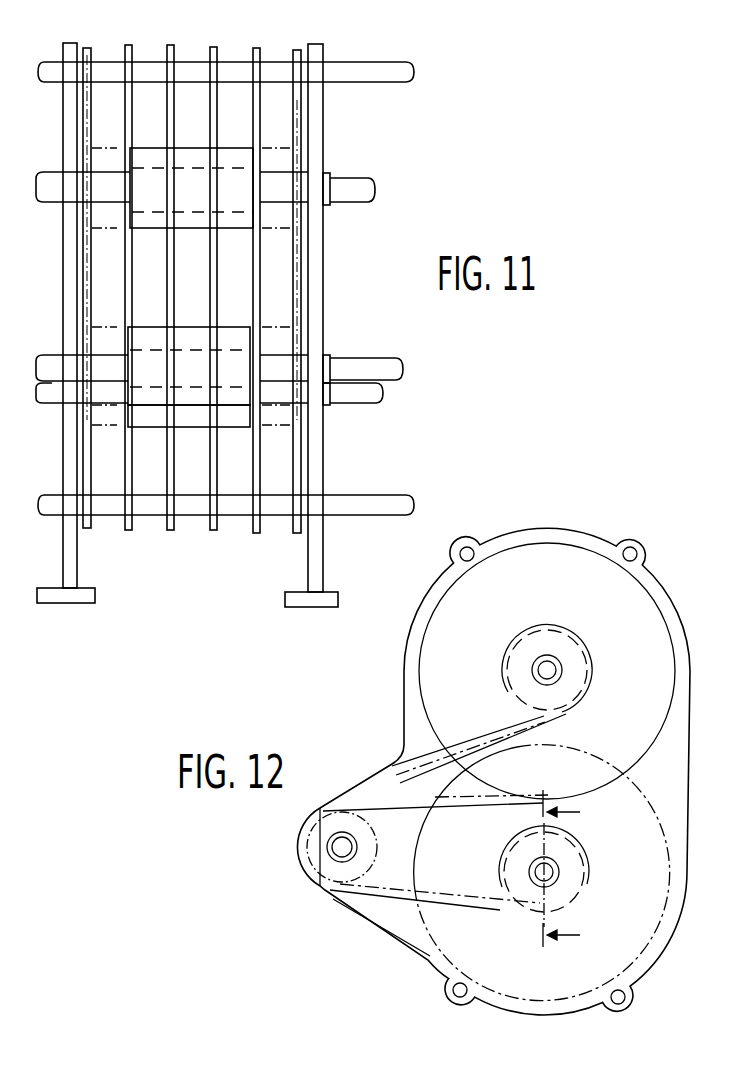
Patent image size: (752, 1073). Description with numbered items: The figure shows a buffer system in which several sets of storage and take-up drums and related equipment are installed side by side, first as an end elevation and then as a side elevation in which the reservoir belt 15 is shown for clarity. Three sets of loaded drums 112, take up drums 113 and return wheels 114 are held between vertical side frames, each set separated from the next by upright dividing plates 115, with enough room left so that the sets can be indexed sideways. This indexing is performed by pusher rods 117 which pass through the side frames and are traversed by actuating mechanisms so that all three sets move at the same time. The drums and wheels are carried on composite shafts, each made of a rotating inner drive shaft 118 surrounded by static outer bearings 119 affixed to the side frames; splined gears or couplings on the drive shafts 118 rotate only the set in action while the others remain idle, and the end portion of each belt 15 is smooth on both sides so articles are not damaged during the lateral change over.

In FIG. 12, the reservoir belt 15 is at (404, 745).
In FIG. 11, the loaded drum 112 is at (233, 160).
In FIG. 12, the loaded drum 112 is at (538, 643).
In FIG. 11, the take up drum 113 is at (228, 419).
In FIG. 12, the take up drum 113 is at (575, 868).
In FIG. 11, the return wheel 114 is at (229, 340).
In FIG. 12, the return wheel 114 is at (300, 848).
In FIG. 11, the upright dividing plate 115 is at (251, 533).
In FIG. 12, the upright dividing plate 115 is at (404, 711).
In FIG. 11, the pusher rod 117 is at (406, 75).
In FIG. 12, the pusher rod 117 is at (621, 540).
In FIG. 11, the inner drive shaft 118 is at (358, 190).
In FIG. 12, the inner drive shaft 118 is at (557, 665).
In FIG. 11, the outer bearing 119 is at (331, 356).
In FIG. 12, the outer bearing 119 is at (563, 677).